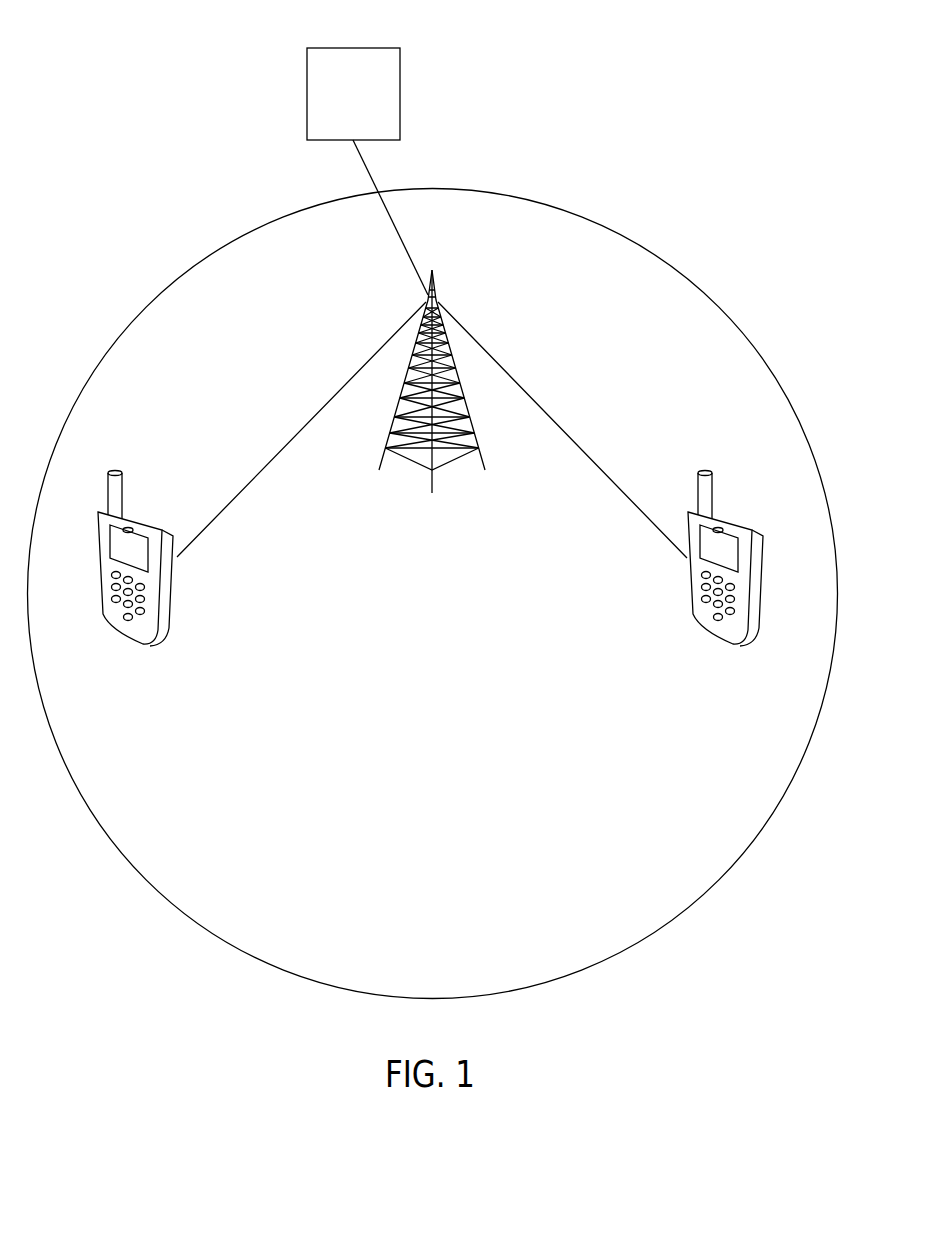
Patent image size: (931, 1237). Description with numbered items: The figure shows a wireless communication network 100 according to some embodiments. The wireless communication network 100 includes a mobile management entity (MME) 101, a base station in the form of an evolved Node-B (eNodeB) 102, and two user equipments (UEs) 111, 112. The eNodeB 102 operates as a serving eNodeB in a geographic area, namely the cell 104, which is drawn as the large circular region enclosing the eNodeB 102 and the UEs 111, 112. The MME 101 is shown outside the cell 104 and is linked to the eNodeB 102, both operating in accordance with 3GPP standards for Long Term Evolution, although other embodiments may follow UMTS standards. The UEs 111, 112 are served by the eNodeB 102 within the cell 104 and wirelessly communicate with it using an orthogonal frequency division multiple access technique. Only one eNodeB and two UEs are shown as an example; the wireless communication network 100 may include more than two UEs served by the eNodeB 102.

The wireless communication network 100 is at (731, 46).
The mobile management entity (MME) 101 is at (353, 48).
The evolved Node-B (eNodeB) 102 is at (436, 297).
The cell 104 is at (751, 340).
The user equipment (UE) 111 is at (177, 577).
The user equipment (UE) 112 is at (767, 577).